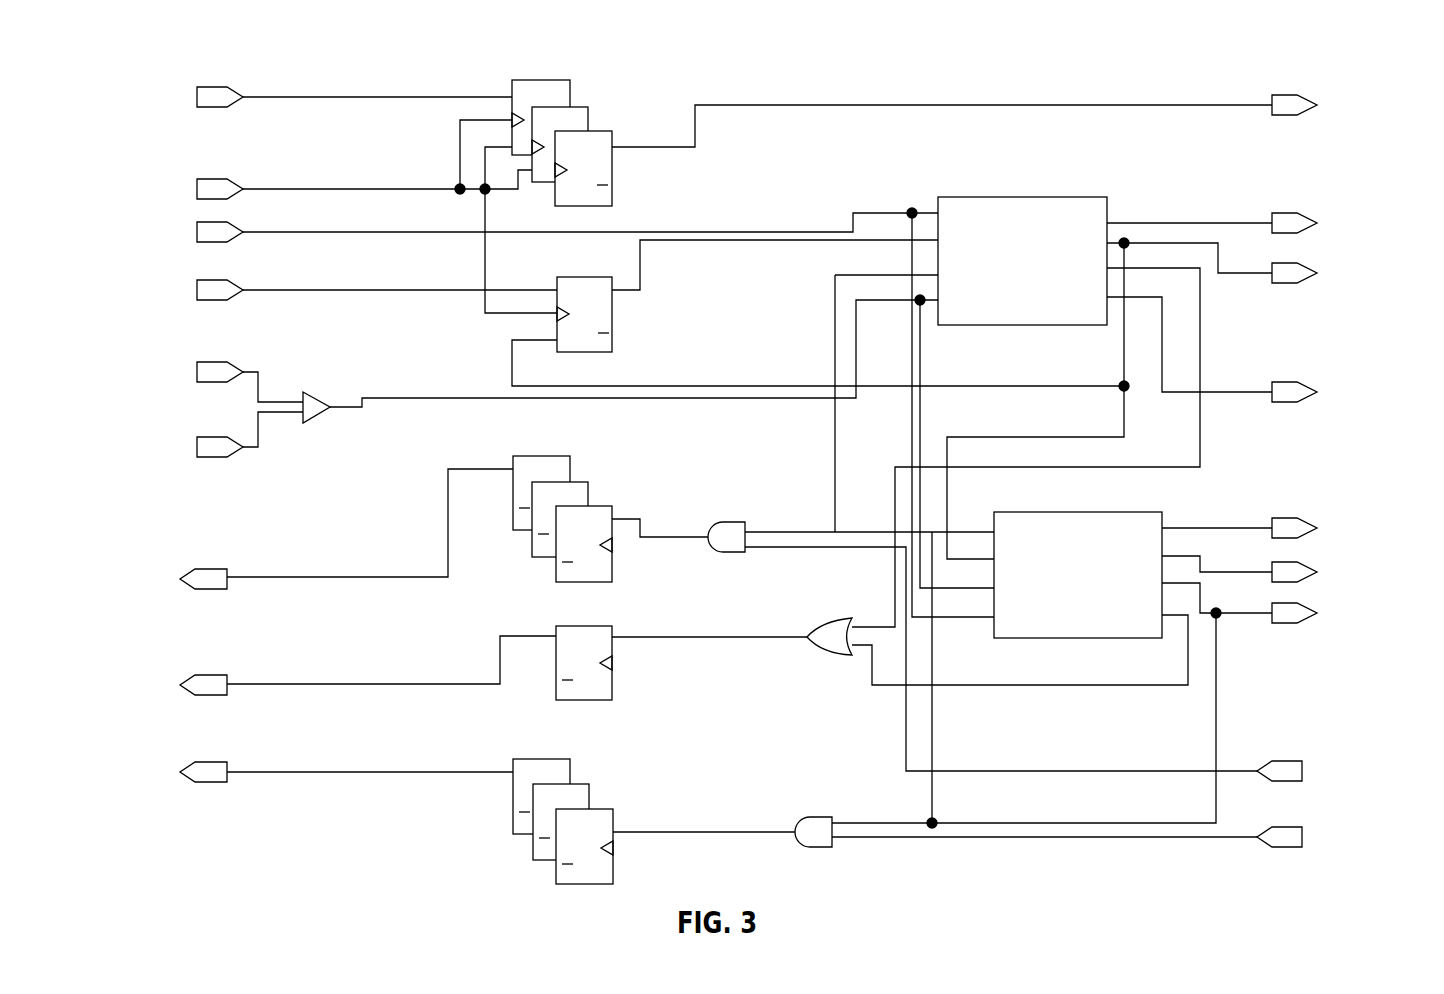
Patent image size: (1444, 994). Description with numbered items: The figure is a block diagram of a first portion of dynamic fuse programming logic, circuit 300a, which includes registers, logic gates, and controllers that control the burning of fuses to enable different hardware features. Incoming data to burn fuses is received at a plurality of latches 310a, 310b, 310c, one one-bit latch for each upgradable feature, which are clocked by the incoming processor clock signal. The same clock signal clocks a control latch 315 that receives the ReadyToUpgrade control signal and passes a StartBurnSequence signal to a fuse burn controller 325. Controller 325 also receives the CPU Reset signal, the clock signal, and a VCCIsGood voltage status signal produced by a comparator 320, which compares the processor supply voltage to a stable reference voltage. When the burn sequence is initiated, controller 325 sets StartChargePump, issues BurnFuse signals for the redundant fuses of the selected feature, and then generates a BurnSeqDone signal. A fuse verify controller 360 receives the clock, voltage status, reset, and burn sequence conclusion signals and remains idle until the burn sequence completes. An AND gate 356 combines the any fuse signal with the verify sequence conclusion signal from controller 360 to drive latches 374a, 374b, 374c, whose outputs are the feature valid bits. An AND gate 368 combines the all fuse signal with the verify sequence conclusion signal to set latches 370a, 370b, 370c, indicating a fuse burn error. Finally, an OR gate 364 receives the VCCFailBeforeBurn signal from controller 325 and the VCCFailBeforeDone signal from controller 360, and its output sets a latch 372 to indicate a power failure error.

The circuit 300a is at (322, 60).
The latch 310a is at (557, 80).
The latch 310b is at (578, 107).
The latch 310c is at (603, 131).
The control latch 315 is at (612, 345).
The comparator 320 is at (318, 394).
The fuse burn controller 325 is at (1035, 197).
The AND gate 356 is at (820, 817).
The fuse verify controller 360 is at (1077, 512).
The OR gate 364 is at (830, 623).
The AND gate 368 is at (733, 522).
The latch 370a is at (555, 456).
The latch 370b is at (580, 482).
The latch 370c is at (602, 506).
The latch 372 is at (612, 680).
The latch 374a is at (556, 759).
The latch 374b is at (578, 784).
The latch 374c is at (601, 809).